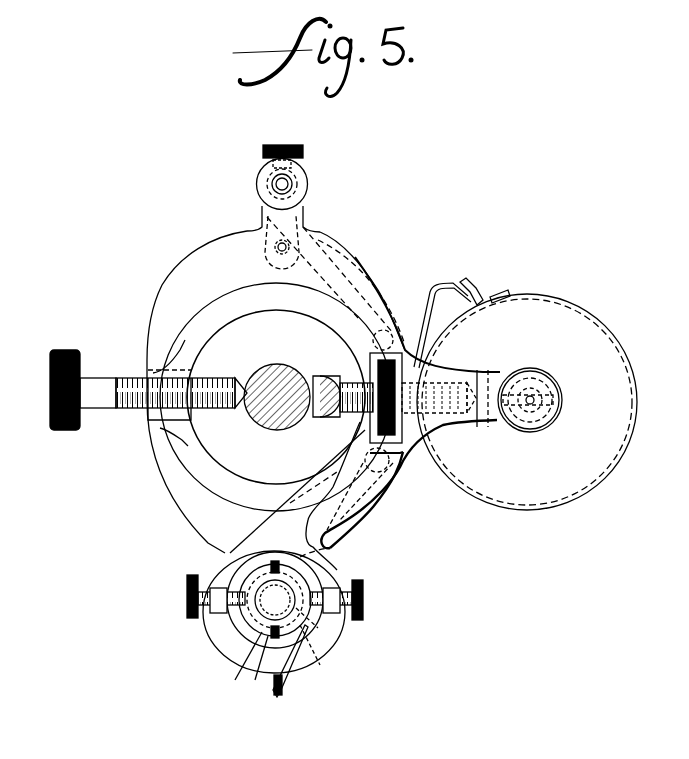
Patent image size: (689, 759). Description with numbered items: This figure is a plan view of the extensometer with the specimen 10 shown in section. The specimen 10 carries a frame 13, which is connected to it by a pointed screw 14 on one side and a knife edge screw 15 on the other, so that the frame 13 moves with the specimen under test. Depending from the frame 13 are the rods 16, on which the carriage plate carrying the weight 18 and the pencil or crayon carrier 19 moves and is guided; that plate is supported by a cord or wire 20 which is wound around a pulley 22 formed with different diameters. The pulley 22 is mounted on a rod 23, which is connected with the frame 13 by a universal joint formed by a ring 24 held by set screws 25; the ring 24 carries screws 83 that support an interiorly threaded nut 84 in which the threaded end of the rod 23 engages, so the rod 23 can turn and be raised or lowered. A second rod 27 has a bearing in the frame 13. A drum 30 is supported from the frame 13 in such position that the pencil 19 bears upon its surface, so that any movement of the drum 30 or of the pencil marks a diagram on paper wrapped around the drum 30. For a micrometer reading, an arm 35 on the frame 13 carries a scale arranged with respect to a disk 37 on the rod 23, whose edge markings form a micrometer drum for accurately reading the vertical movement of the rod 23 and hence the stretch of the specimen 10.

The specimen 10 is at (280, 382).
The frame 13 is at (276, 385).
The pointed screw 14 is at (127, 358).
The knife edge screw 15 is at (345, 412).
The rods 16 is at (398, 330).
The weight 18 is at (419, 345).
The pencil or crayon carrier 19 is at (438, 320).
The cord or wire 20 is at (333, 563).
The pulley 22 is at (235, 680).
The rod 23 is at (320, 665).
The ring 24 is at (255, 680).
The set screws 25 is at (187, 598).
The second rod 27 is at (305, 185).
The drum 30 is at (608, 462).
The arm 35 is at (295, 690).
The disk 37 is at (228, 636).
The screws 83 is at (278, 562).
The interiorly threaded nut 84 is at (318, 628).